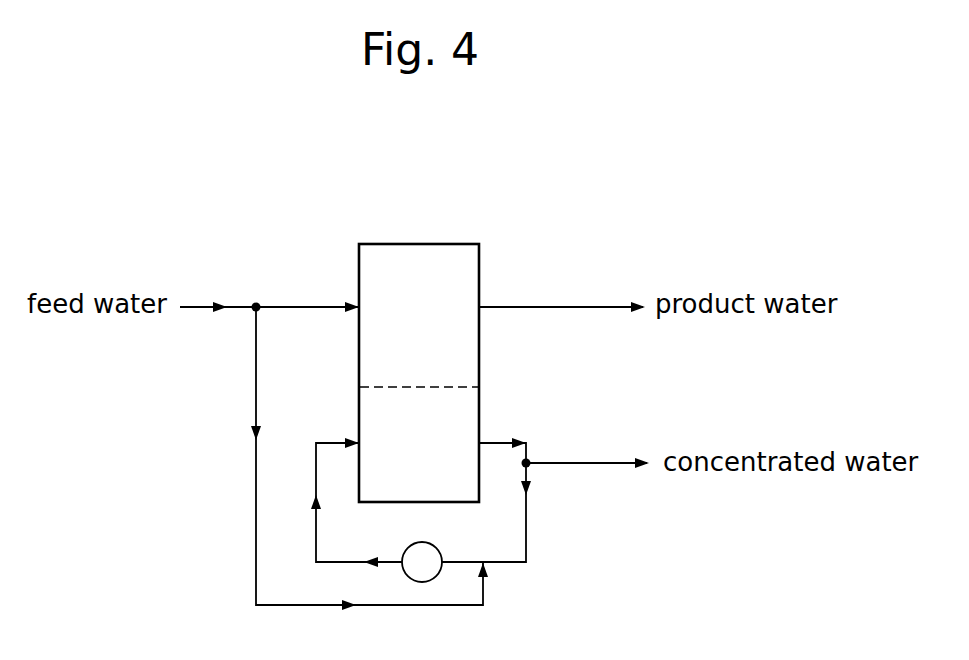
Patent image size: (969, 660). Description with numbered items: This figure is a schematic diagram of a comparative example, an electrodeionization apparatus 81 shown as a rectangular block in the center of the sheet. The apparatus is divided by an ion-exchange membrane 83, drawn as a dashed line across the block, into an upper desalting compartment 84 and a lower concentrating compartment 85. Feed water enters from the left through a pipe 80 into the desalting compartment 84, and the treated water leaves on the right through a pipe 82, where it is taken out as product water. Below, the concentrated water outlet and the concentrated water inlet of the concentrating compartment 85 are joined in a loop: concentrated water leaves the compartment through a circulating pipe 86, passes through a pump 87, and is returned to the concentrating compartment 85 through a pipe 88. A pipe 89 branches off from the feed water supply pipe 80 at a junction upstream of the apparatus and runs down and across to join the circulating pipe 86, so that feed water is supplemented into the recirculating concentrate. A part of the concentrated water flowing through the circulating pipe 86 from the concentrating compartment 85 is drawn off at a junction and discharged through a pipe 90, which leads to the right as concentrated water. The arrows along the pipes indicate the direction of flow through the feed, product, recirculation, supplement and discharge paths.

The pipe 80 is at (297, 305).
The electrodeionization apparatus 81 is at (420, 236).
The pipe 82 is at (518, 305).
The ion-exchange membrane 83 is at (406, 384).
The desalting compartment 84 is at (403, 288).
The concentrating compartment 85 is at (436, 438).
The circulating pipe 86 is at (511, 564).
The pump 87 is at (440, 555).
The pipe 88 is at (305, 455).
The pipe 89 is at (256, 570).
The pipe 90 is at (568, 466).